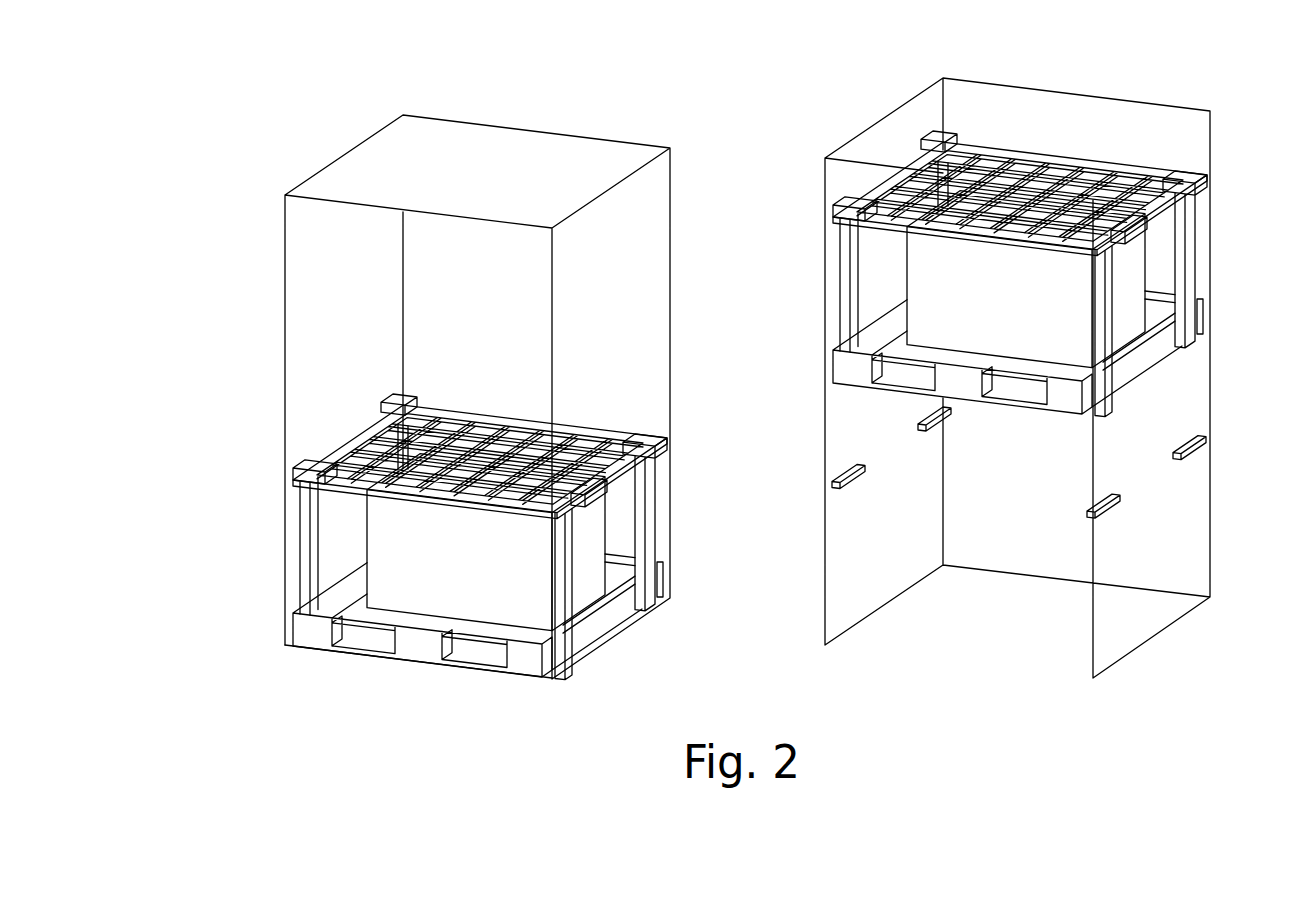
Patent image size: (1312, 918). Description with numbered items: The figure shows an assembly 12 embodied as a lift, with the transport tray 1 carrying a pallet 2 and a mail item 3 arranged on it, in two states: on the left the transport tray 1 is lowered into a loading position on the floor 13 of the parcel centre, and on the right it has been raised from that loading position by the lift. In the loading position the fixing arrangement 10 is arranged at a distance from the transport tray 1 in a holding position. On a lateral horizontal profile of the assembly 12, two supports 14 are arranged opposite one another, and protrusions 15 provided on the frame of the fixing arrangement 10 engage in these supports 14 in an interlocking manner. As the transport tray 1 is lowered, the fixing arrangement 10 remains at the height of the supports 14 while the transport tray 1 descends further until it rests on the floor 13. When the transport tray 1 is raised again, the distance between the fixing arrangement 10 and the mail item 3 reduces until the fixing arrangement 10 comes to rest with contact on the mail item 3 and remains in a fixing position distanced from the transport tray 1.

The transport tray 1 is at (523, 663).
The pallet 2 is at (470, 630).
The mail item 3 is at (495, 610).
The fixing arrangement 10 is at (485, 418).
The assembly 12 is at (655, 221).
The floor 13 is at (352, 667).
The support 14 is at (672, 443).
The protrusion 15 is at (658, 433).